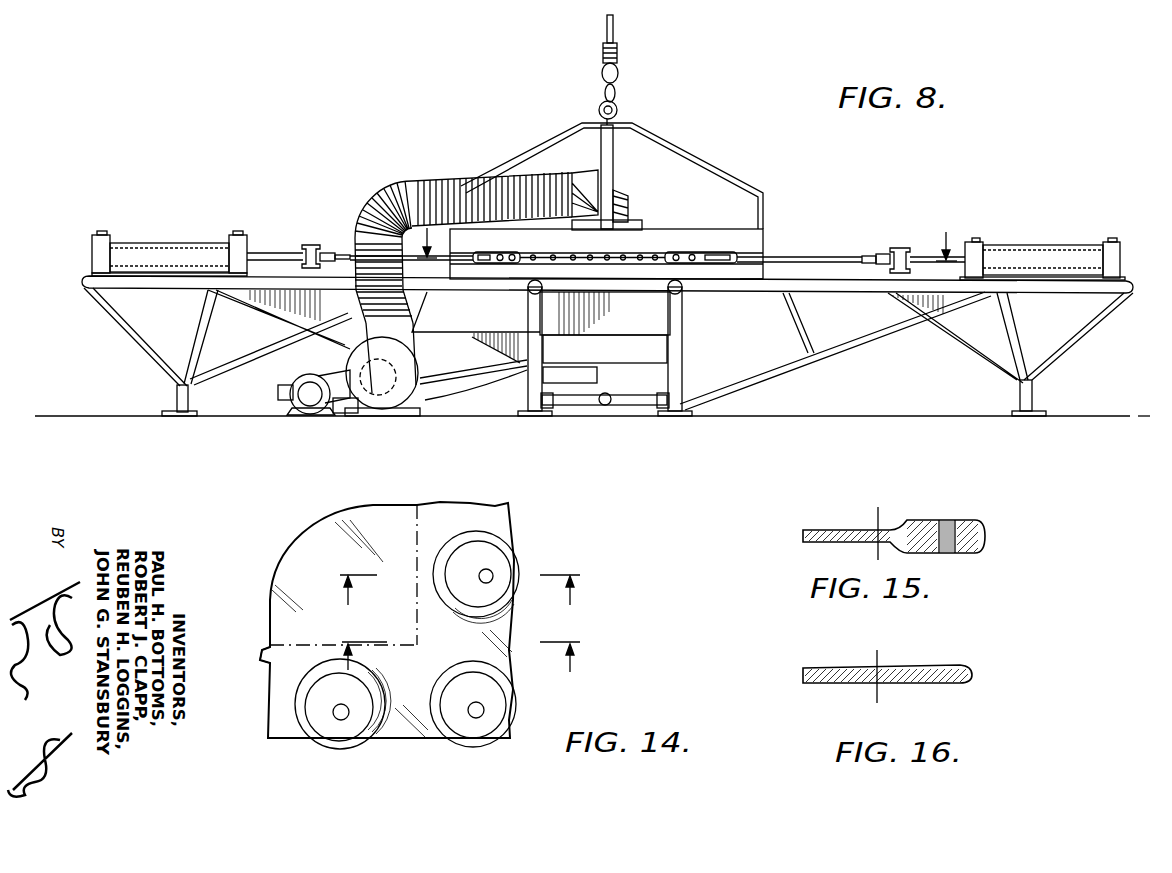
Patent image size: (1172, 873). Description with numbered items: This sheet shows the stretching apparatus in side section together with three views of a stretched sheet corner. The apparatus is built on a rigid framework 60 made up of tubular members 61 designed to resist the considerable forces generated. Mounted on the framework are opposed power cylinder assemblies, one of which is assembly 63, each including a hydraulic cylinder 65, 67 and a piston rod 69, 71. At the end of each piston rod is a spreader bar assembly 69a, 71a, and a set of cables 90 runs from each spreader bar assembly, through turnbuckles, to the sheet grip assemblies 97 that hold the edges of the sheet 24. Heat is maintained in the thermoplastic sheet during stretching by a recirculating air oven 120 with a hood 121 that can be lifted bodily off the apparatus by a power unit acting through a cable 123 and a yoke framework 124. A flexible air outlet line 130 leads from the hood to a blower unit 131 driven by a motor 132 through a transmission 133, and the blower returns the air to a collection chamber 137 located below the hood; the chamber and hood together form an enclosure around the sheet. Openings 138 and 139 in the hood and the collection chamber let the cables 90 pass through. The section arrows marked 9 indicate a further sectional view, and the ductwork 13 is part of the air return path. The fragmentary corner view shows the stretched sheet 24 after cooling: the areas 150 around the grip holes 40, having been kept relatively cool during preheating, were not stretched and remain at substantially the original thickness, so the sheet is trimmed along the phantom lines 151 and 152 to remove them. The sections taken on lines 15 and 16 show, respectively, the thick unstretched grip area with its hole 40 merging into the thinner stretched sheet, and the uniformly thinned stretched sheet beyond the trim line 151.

In FIG. 8, the section line 9 is at (680, 233).
In FIG. 8, the duct 13 is at (453, 372).
In FIG. 14, the section line 15— 15 is at (457, 590).
In FIG. 14, the section line 16— 16 is at (462, 646).
In FIG. 15, the sheet 24 is at (830, 530).
In FIG. 16, the sheet 24 is at (838, 670).
In FIG. 14, the grip holes 40 is at (490, 577).
In FIG. 15, the grip holes 40 is at (948, 555).
In FIG. 8, the rigid framework 60 is at (889, 342).
In FIG. 8, the tubular members 61 is at (150, 240).
In FIG. 8, the power cylinder assembly 63 is at (1003, 242).
In FIG. 8, the hydraulic cylinder 65 is at (183, 242).
In FIG. 8, the hydraulic cylinder 67 is at (1082, 252).
In FIG. 8, the piston rod 69 is at (268, 253).
In FIG. 8, the spreader bar assembly 69a is at (311, 240).
In FIG. 8, the piston rod 71 is at (922, 256).
In FIG. 8, the spreader bar assembly 71a is at (897, 242).
In FIG. 8, the cables 90 is at (440, 264).
In FIG. 8, the sheet grip assembly 97 is at (532, 268).
In FIG. 8, the recirculating air oven 120 is at (770, 236).
In FIG. 8, the hood 121 is at (722, 232).
In FIG. 8, the cable 123 is at (616, 22).
In FIG. 8, the yoke framework 124 is at (545, 146).
In FIG. 8, the flexible air outlet line 130 is at (390, 180).
In FIG. 8, the blower unit 131 is at (394, 400).
In FIG. 8, the motor 132 is at (316, 402).
In FIG. 8, the transmission 133 is at (343, 405).
In FIG. 8, the collection chamber 137 is at (757, 270).
In FIG. 8, the openings 138 is at (657, 252).
In FIG. 8, the openings 139 is at (638, 264).
In FIG. 14, the areas surrounding grip holes 150 is at (500, 552).
In FIG. 15, the areas surrounding grip holes 150 is at (967, 522).
In FIG. 14, the phantom line 151 is at (417, 527).
In FIG. 15, the phantom line 151 is at (880, 520).
In FIG. 16, the phantom line 151 is at (880, 690).
In FIG. 14, the phantom line 152 is at (262, 655).